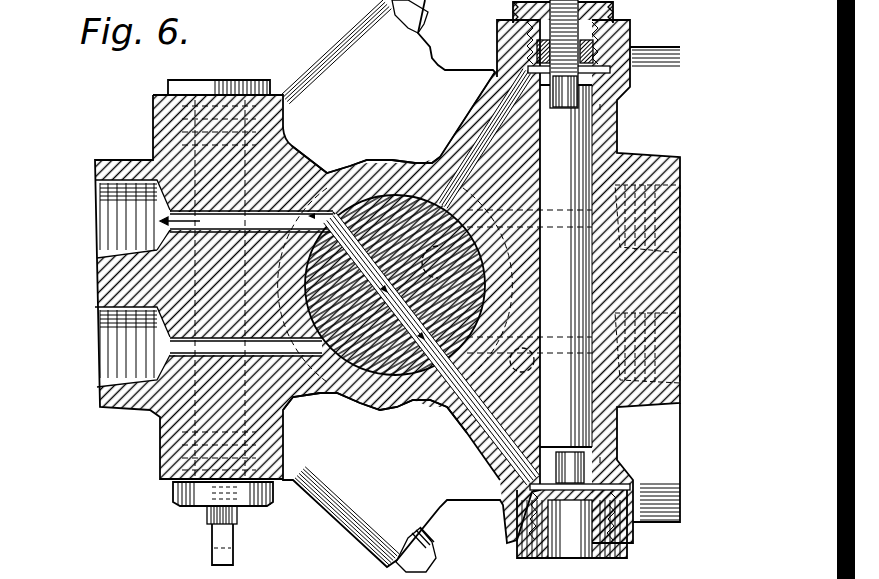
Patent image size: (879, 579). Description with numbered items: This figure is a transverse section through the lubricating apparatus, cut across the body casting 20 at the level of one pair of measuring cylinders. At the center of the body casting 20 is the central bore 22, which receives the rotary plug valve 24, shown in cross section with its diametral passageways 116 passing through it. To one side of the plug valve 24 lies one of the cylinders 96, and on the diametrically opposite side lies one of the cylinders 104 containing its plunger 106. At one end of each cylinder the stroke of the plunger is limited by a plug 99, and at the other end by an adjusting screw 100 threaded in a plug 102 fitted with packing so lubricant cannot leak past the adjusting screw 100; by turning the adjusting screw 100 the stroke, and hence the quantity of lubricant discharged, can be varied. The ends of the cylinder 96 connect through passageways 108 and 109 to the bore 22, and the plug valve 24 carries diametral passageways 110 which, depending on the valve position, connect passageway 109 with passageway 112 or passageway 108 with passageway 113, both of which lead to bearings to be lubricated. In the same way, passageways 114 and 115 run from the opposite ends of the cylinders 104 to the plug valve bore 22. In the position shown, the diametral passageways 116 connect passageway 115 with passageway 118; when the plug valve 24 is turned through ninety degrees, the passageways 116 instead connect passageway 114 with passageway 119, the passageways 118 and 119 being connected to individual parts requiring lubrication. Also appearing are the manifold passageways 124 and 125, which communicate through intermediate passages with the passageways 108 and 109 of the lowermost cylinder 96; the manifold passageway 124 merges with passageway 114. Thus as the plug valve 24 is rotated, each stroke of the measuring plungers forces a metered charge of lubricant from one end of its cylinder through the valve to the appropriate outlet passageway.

The body casting 20 is at (452, 70).
The central bore 22 is at (408, 380).
The plug valve 24 is at (356, 292).
The cylinders 96 is at (158, 148).
The plug 99 is at (248, 82).
The adjusting screw 100 is at (609, 31).
The plug 102 is at (609, 8).
The cylinders 104 is at (590, 153).
The plunger 106 is at (567, 288).
The passageway 108 is at (319, 160).
The passageway 109 is at (310, 411).
The diametral passageways 110 is at (446, 262).
The passageways 112 is at (490, 197).
The passageways 113 is at (515, 367).
The passageway 114 is at (493, 128).
The passageway 115 is at (463, 448).
The diametral passageways 116 is at (380, 200).
The passageways 118 is at (249, 211).
The passageways 119 is at (218, 341).
The manifold passageway 124 is at (582, 107).
The manifold passageway 125 is at (590, 460).